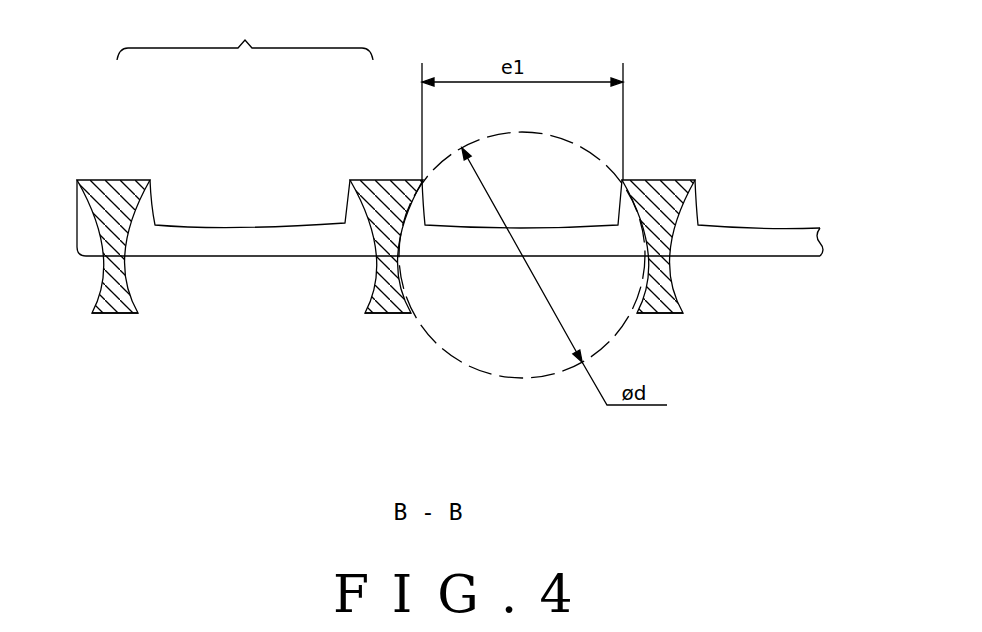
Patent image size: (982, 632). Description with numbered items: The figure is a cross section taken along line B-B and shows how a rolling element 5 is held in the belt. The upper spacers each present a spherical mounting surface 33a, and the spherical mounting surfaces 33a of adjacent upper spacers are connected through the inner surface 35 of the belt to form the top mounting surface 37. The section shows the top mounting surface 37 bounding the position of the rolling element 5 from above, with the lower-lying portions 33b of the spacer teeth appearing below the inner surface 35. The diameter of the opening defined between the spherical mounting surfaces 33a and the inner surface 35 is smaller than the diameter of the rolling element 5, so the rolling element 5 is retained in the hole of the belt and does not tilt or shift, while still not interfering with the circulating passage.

The top mounting surface 37 is at (245, 35).
The spherical mounting surface 33a is at (138, 232).
The lower tooth portions 33b is at (102, 281).
The inner surface 35 is at (251, 243).
The rolling element 5 is at (440, 347).